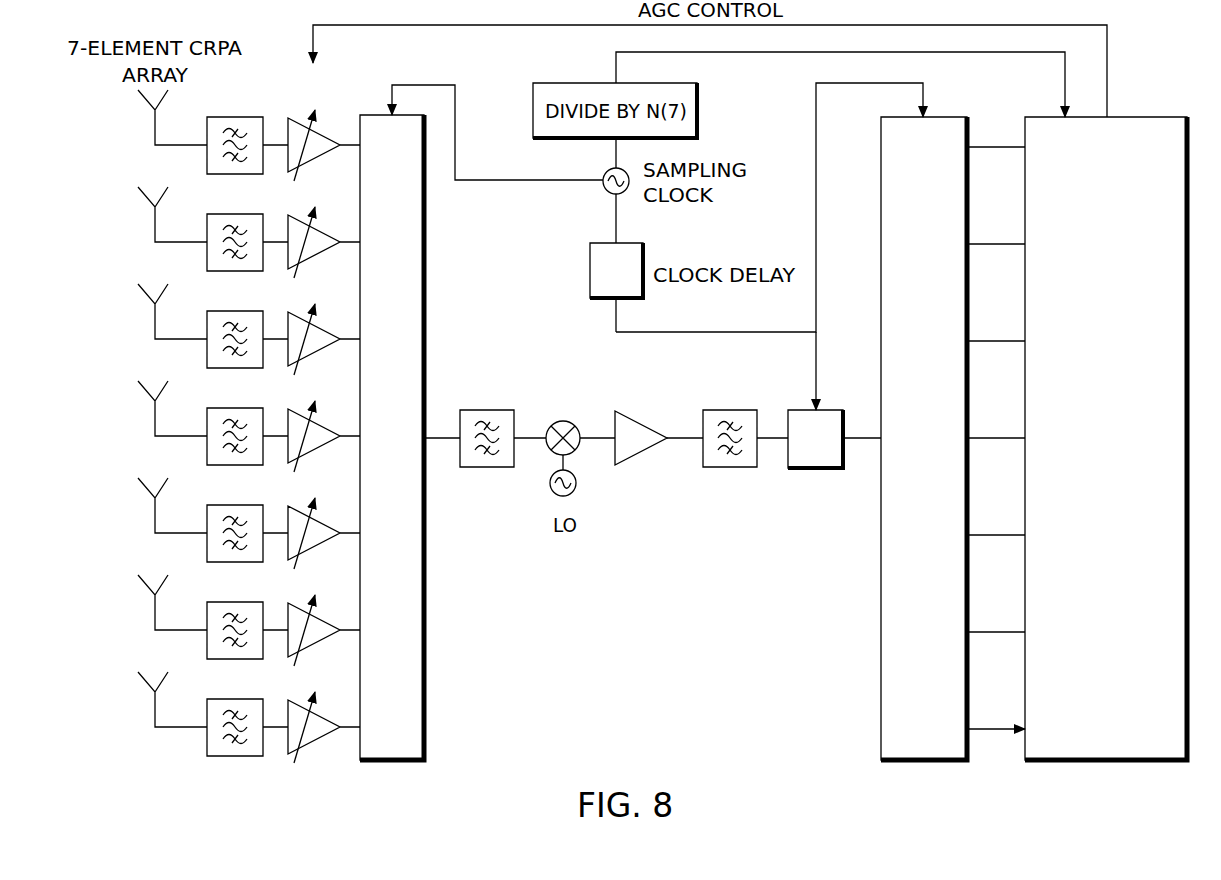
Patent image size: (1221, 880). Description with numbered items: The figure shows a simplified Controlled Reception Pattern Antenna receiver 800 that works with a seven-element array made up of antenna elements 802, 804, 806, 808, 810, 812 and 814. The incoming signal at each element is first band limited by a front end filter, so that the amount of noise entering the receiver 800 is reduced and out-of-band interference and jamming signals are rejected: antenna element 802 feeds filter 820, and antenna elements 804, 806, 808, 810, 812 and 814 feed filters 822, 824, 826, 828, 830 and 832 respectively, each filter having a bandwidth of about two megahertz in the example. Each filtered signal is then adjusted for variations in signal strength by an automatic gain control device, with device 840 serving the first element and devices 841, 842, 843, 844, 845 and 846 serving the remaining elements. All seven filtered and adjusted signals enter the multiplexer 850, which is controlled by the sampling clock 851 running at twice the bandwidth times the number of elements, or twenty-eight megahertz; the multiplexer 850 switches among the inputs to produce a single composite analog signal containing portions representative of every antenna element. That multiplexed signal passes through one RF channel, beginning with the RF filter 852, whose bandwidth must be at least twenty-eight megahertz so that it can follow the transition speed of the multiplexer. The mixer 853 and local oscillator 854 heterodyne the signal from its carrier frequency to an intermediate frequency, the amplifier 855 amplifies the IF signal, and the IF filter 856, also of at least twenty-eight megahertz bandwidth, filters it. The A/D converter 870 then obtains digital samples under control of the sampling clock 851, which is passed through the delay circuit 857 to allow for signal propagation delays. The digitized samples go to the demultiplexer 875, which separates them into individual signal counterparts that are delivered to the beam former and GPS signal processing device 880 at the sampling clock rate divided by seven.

The receiver 800 is at (807, 749).
The antenna element 802 is at (129, 157).
The antenna element 804 is at (129, 254).
The antenna element 806 is at (129, 351).
The antenna element 808 is at (129, 448).
The antenna element 810 is at (129, 545).
The antenna element 812 is at (129, 642).
The antenna element 814 is at (129, 739).
The front end filter 820 is at (227, 190).
The front end filter 822 is at (215, 271).
The front end filter 824 is at (215, 368).
The front end filter 826 is at (215, 465).
The front end filter 828 is at (215, 562).
The front end filter 830 is at (215, 659).
The front end filter 832 is at (215, 756).
The automatic gain control device 840 is at (331, 173).
The automatic gain control device 841 is at (325, 257).
The automatic gain control device 842 is at (325, 354).
The automatic gain control device 843 is at (325, 451).
The automatic gain control device 844 is at (325, 548).
The automatic gain control device 845 is at (325, 645).
The automatic gain control device 846 is at (325, 742).
The multiplexer 850 is at (410, 173).
The sampling clock 851 is at (605, 192).
The RF filter 852 is at (487, 467).
The mixer 853 is at (563, 421).
The local oscillator 854 is at (575, 489).
The amplifier 855 is at (635, 410).
The IF filter 856 is at (728, 467).
The delay circuit 857 is at (590, 270).
The A/D converter 870 is at (814, 468).
The demultiplexer 875 is at (920, 760).
The beam former and GPS signal processing device 880 is at (1105, 760).